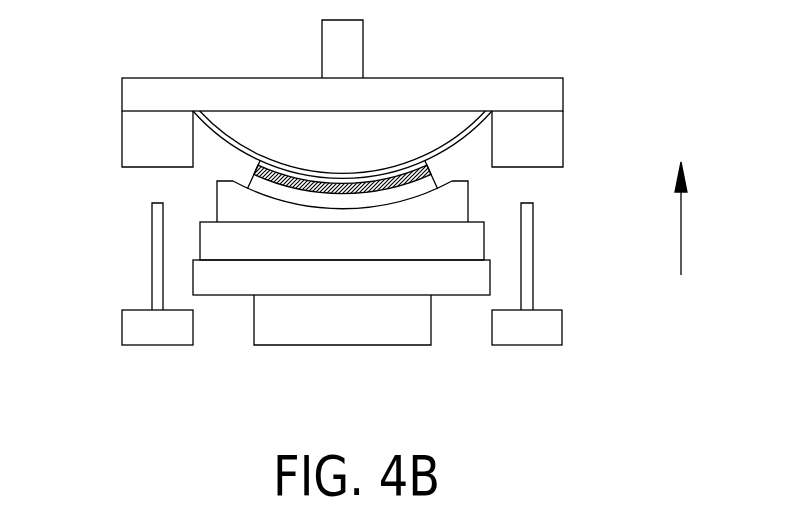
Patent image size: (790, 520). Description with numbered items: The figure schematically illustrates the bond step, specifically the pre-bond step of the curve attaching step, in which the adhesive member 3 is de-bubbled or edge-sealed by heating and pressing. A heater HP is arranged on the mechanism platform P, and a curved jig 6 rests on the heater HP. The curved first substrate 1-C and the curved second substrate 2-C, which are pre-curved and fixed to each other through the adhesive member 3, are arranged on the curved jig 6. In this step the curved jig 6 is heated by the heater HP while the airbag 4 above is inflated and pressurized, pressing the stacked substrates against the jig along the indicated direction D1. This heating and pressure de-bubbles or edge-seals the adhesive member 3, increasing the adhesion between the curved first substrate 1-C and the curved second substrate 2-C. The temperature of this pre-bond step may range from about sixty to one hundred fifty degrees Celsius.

The curved first substrate 1-C is at (258, 162).
The curved second substrate 2-C is at (285, 201).
The adhesive member 3 is at (252, 177).
The airbag 4 is at (486, 122).
The curved jig 6 is at (458, 190).
The heater HP is at (472, 238).
The mechanism platform P is at (450, 288).
The pressing direction D1 is at (681, 198).